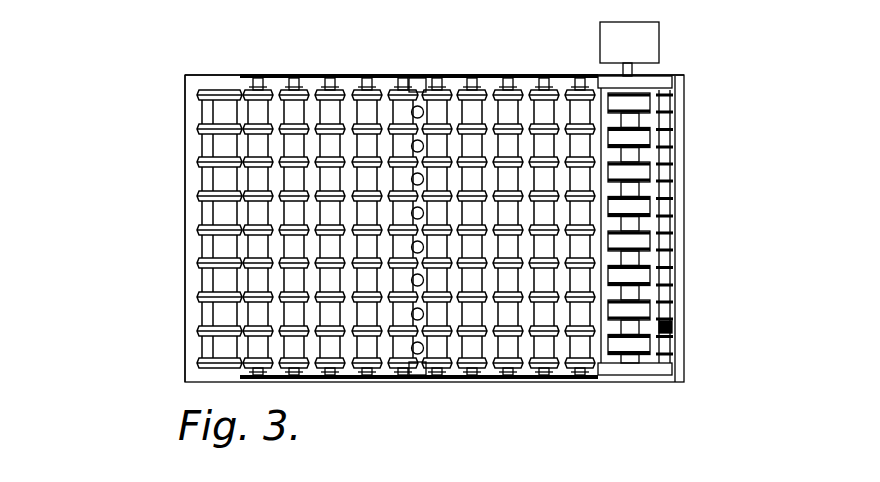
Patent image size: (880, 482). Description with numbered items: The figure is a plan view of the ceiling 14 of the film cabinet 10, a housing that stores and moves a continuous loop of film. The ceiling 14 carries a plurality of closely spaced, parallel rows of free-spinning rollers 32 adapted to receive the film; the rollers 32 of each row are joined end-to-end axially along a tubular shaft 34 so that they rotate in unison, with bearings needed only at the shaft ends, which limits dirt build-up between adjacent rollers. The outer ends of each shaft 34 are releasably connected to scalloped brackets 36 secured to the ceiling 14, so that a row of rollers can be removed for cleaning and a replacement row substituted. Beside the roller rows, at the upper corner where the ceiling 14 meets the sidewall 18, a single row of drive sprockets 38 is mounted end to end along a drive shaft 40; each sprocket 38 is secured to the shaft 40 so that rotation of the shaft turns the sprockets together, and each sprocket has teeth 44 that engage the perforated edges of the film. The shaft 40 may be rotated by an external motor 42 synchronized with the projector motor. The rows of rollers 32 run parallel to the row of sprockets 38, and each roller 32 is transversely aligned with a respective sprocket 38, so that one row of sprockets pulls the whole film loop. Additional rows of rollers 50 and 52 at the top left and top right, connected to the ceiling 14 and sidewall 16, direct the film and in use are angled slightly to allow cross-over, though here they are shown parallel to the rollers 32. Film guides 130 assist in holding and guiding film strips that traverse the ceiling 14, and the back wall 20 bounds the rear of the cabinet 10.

The film cabinet 10 is at (128, 209).
The ceiling 14 is at (196, 84).
The sidewall 16 is at (185, 268).
The sidewall 18 is at (686, 210).
The back wall 20 is at (448, 36).
The free-spinning rollers 32 is at (222, 146).
The tubular shaft 34 is at (241, 85).
The scalloped brackets 36 is at (316, 74).
The drive sprockets 38 is at (648, 245).
The drive shaft 40 is at (670, 328).
The external motor 42 is at (660, 45).
The teeth 44 is at (640, 137).
The row of free-spinning rollers 50 is at (205, 345).
The row of free-spinning rollers 52 is at (667, 105).
The film guides 130 is at (418, 362).